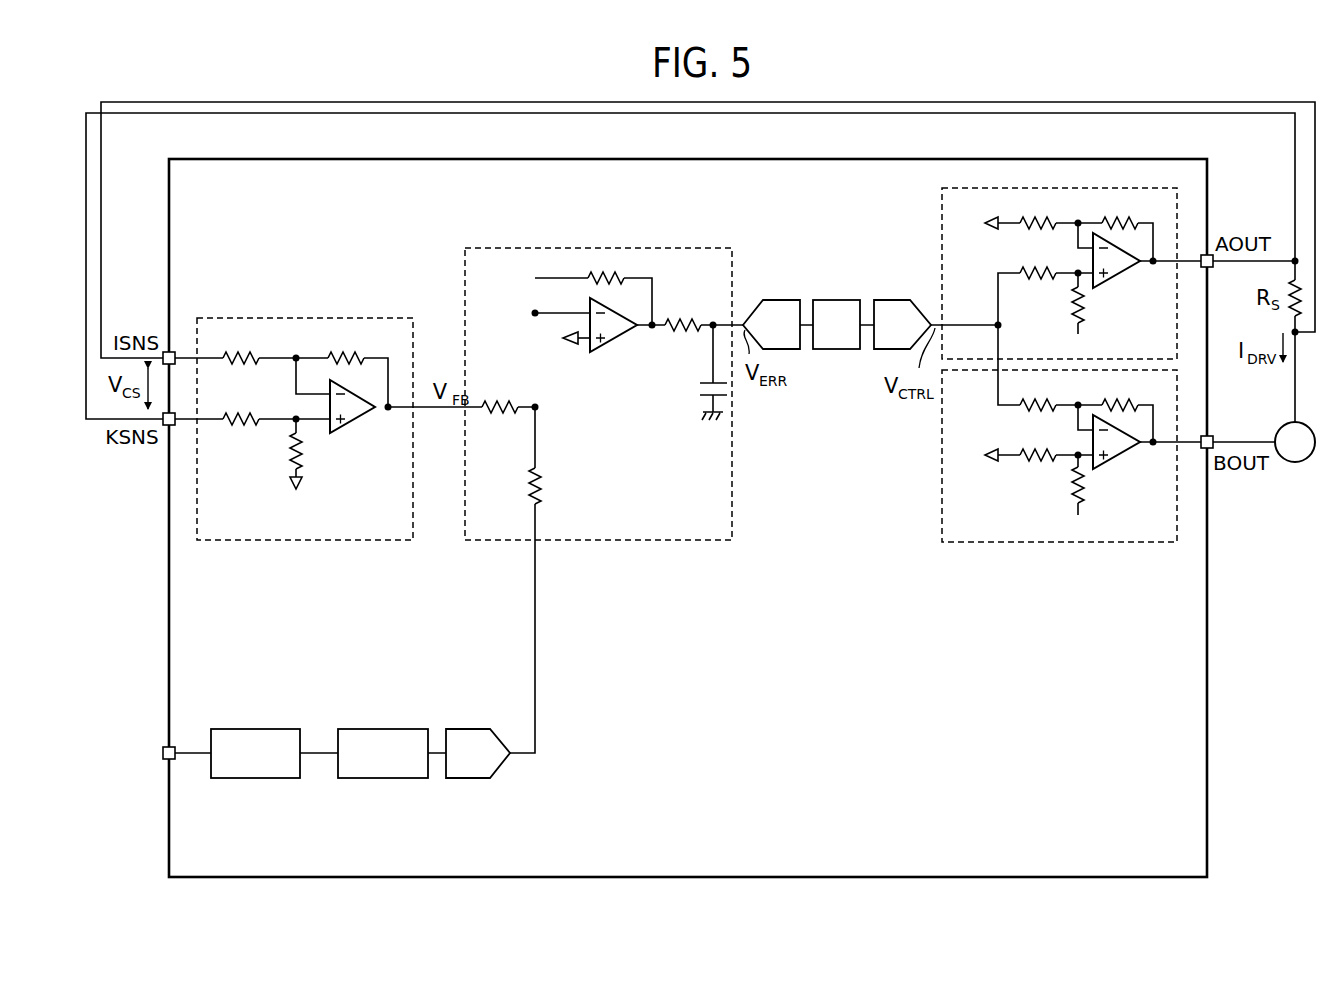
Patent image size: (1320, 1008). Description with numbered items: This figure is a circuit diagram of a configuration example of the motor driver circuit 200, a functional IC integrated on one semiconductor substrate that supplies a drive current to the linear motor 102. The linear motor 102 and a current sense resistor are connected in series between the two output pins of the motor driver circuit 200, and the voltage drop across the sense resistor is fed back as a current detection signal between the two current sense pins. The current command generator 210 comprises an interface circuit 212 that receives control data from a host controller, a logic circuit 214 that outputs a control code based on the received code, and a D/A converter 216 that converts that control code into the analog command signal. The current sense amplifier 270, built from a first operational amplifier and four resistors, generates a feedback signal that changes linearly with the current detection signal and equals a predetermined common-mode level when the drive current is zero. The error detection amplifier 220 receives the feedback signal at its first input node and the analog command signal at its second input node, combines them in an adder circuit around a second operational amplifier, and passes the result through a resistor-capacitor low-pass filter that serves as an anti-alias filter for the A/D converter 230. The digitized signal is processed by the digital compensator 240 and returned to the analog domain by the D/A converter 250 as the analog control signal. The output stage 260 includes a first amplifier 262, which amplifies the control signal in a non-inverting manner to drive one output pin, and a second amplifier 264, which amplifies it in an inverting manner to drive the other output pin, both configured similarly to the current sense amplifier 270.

The linear motor 102 is at (1295, 462).
The motor driver circuit 200 is at (1207, 736).
The current command generator 210 is at (386, 771).
The interface circuit 212 is at (254, 729).
The logic circuit 214 is at (382, 729).
The D/A converter 216 is at (478, 735).
The error detection amplifier 220 is at (612, 540).
The A/D converter 230 is at (783, 300).
The digital compensator 240 is at (836, 300).
The D/A converter 250 is at (888, 300).
The output stage 260 is at (1118, 388).
The first amplifier 262 is at (1100, 188).
The second amplifier 264 is at (942, 562).
The current sense amplifier 270 is at (262, 540).